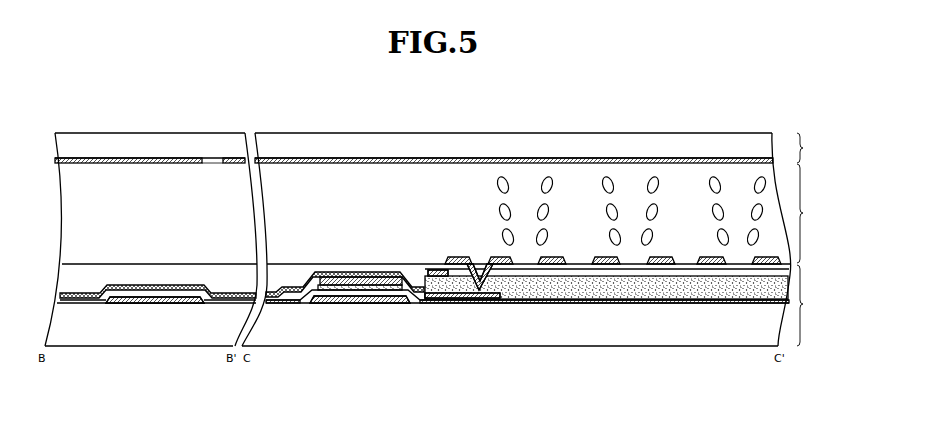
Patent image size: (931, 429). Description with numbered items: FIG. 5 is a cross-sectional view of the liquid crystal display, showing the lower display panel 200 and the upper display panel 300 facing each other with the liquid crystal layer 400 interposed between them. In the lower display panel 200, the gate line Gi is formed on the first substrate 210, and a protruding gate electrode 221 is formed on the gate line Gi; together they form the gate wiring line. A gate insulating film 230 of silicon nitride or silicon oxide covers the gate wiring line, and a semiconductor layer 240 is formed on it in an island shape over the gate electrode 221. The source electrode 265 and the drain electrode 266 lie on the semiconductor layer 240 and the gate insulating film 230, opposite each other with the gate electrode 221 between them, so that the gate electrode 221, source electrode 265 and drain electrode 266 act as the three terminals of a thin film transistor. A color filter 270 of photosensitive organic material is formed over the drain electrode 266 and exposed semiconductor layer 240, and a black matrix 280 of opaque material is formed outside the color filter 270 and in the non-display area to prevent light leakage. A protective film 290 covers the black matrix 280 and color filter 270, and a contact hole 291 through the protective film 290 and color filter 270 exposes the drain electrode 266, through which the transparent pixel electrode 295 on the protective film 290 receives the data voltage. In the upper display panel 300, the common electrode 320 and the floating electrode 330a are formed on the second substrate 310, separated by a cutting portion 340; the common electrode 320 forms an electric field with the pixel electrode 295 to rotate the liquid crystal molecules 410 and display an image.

The second substrate 310 is at (163, 145).
The common electrode 320 is at (232, 158).
The floating electrode 330a is at (112, 158).
The cutting portion 340 is at (207, 160).
The first substrate 210 is at (182, 325).
The gate insulating film 230 is at (215, 302).
The gate line Gi is at (145, 302).
The gate electrode 221 is at (353, 302).
The semiconductor layer 240 is at (332, 298).
The source electrode 265 is at (310, 302).
The drain electrode 266 is at (378, 298).
The black matrix 280 is at (95, 300).
The protective film 290 is at (69, 282).
The contact hole 291 is at (481, 256).
The pixel electrode 295 is at (598, 266).
The color filter 270 is at (658, 287).
The liquid crystal molecules 410 is at (661, 183).
The upper display panel 300 is at (813, 148).
The liquid crystal layer 400 is at (813, 213).
The lower display panel 200 is at (813, 305).